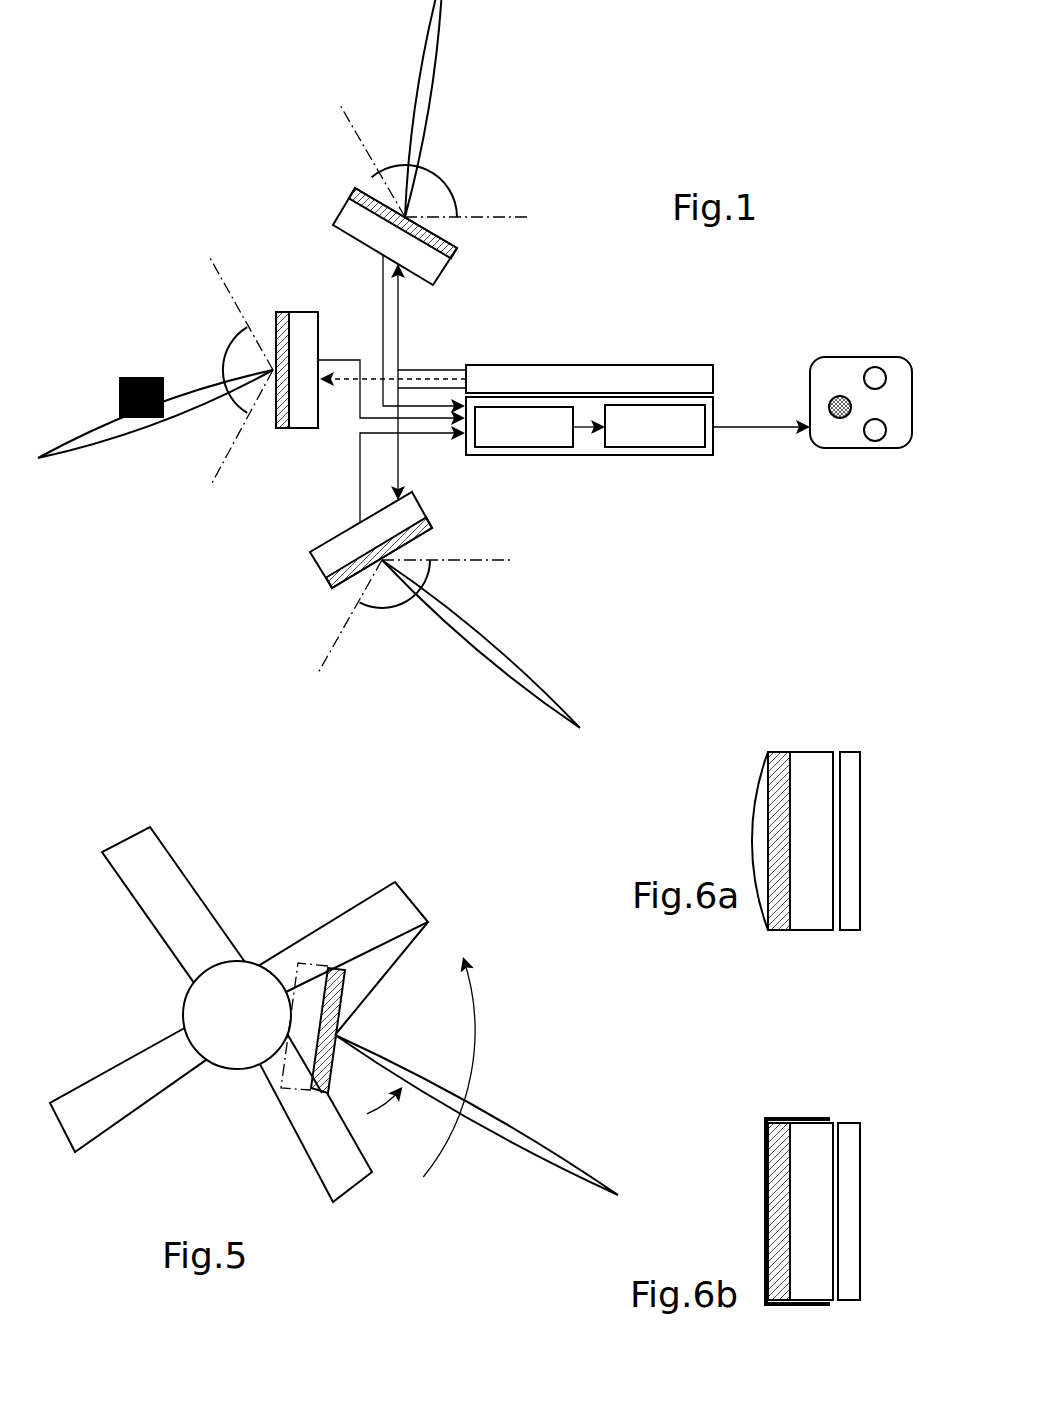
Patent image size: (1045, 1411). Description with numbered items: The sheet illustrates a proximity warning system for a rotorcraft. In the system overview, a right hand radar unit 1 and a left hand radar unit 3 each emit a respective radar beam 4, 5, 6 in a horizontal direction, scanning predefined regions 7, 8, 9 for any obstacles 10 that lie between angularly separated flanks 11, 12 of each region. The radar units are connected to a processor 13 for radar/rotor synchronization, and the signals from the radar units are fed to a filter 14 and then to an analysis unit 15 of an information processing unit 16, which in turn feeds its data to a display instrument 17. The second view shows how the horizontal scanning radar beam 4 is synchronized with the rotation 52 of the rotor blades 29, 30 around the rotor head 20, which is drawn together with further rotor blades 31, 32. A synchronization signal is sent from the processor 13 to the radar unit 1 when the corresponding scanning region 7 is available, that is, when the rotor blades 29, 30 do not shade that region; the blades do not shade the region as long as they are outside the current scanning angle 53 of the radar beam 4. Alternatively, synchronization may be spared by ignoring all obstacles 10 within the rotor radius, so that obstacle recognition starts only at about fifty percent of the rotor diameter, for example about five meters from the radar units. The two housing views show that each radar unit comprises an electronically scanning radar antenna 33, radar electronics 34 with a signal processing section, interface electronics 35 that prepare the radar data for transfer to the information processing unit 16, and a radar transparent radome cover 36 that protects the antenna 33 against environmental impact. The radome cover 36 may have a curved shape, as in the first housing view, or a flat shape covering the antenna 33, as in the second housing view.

In FIG. 1, the right hand radar unit 1 is at (335, 208).
In FIG. 5, the right hand radar unit 1 is at (313, 990).
In FIG. 1, the left hand radar unit 3 is at (315, 568).
In FIG. 1, the radar beam 4 is at (443, 50).
In FIG. 5, the radar beam 4 is at (530, 1147).
In FIG. 1, the radar beam 5 is at (85, 453).
In FIG. 1, the radar beam 6 is at (503, 652).
In FIG. 1, the predefined region 7 is at (482, 155).
In FIG. 1, the predefined region 8 is at (205, 300).
In FIG. 1, the predefined region 9 is at (378, 647).
In FIG. 1, the obstacle 10 is at (148, 377).
In FIG. 1, the flank 11 is at (490, 220).
In FIG. 1, the flank 12 is at (348, 117).
In FIG. 1, the processor for radar/rotor synchronization 13 is at (595, 375).
In FIG. 1, the filter 14 is at (524, 427).
In FIG. 1, the analysis unit 15 is at (655, 426).
In FIG. 1, the information processing unit 16 is at (588, 457).
In FIG. 1, the display instrument 17 is at (845, 370).
In FIG. 5, the rotor head 20 is at (207, 1013).
In FIG. 5, the rotor blade 29 is at (402, 908).
In FIG. 5, the rotor blade 30 is at (320, 1128).
In FIG. 5, the second arm 31 is at (115, 1107).
In FIG. 5, the third arm 32 is at (155, 880).
In FIG. 6A, the electronically scanning radar antenna 33 is at (782, 915).
In FIG. 6B, the electronically scanning radar antenna 33 is at (780, 1230).
In FIG. 6A, the radar electronics 34 is at (815, 762).
In FIG. 6B, the radar electronics 34 is at (815, 1135).
In FIG. 6A, the interface electronics 35 is at (850, 918).
In FIG. 6B, the interface electronics 35 is at (850, 1132).
In FIG. 6A, the radar transparent radome cover 36 is at (753, 823).
In FIG. 6B, the radar transparent radome cover 36 is at (763, 1152).
In FIG. 5, the rotation 52 is at (477, 1033).
In FIG. 5, the current scanning angle 53 is at (388, 1102).